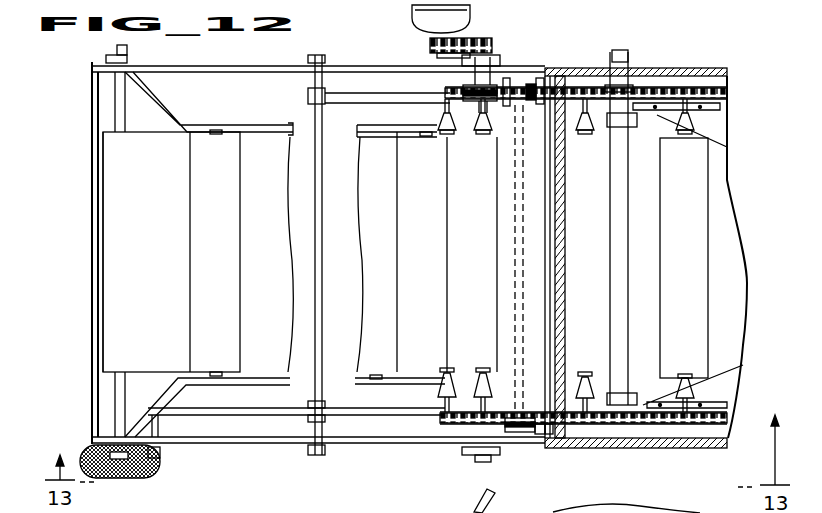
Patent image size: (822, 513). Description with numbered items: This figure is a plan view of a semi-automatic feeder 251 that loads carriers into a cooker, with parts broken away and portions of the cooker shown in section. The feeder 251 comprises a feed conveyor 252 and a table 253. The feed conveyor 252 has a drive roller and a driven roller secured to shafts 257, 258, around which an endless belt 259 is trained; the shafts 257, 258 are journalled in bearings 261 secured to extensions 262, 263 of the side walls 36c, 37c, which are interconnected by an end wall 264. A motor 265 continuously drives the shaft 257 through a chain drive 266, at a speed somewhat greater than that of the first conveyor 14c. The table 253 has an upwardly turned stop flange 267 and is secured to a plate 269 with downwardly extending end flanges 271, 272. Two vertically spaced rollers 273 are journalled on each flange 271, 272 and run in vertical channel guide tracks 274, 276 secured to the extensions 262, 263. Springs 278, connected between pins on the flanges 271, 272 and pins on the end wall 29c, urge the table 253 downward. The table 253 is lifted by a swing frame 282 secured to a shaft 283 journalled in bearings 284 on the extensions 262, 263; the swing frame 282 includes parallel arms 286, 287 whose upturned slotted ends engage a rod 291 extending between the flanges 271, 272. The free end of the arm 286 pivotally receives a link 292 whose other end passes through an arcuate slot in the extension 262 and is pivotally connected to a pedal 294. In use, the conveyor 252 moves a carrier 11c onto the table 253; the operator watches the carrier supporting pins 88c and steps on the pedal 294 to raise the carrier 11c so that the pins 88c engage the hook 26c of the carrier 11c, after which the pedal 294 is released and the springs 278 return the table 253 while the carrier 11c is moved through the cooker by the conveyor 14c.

The semi-automatic feeder 251 is at (84, 124).
The bearings 261 is at (134, 59).
The bearings 284 is at (320, 62).
The extension 263 is at (238, 68).
The shaft 283 is at (318, 127).
The arm 287 is at (345, 101).
The shaft 257 is at (450, 113).
The motor 265 is at (470, 17).
The chain drive 266 is at (473, 42).
The channel guide track 276 is at (512, 82).
The rollers 273 is at (530, 70).
The end flange 272 is at (533, 88).
The side wall 37c is at (693, 68).
The first conveyor 14c is at (731, 85).
The hook 26c is at (213, 134).
The carrier 11c is at (184, 328).
The carrier supporting pins 88c is at (483, 137).
The springs 278 is at (587, 136).
The feed conveyor 252 is at (157, 216).
The end wall 264 is at (97, 263).
The endless belt 259 is at (117, 308).
The plate 269 is at (472, 254).
The rod 291 is at (515, 245).
The end wall 29c is at (565, 203).
The stop flange 267 is at (548, 240).
The table 253 is at (556, 346).
The shaft 258 is at (120, 390).
The swing frame 282 is at (243, 410).
The link 292 is at (160, 417).
The arm 286 is at (400, 414).
The extension 262 is at (400, 442).
The pedal 294 is at (148, 476).
The end flange 271 is at (537, 434).
The channel guide track 274 is at (545, 440).
The side wall 36c is at (677, 447).